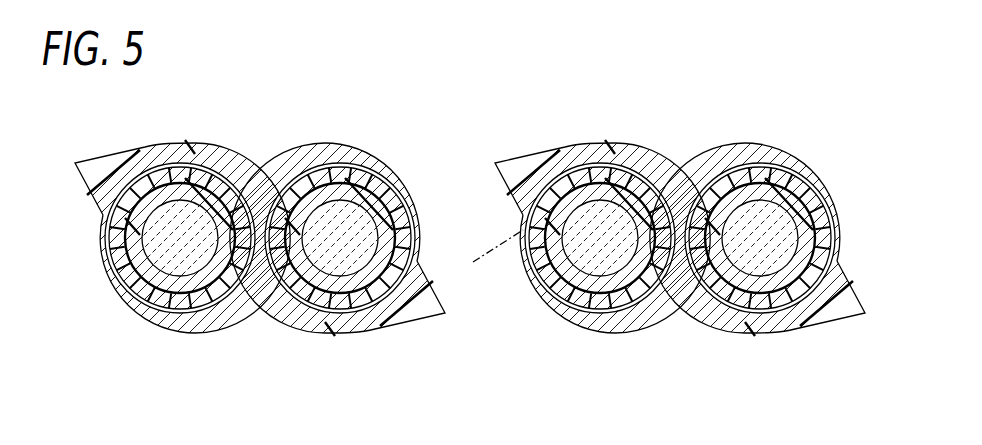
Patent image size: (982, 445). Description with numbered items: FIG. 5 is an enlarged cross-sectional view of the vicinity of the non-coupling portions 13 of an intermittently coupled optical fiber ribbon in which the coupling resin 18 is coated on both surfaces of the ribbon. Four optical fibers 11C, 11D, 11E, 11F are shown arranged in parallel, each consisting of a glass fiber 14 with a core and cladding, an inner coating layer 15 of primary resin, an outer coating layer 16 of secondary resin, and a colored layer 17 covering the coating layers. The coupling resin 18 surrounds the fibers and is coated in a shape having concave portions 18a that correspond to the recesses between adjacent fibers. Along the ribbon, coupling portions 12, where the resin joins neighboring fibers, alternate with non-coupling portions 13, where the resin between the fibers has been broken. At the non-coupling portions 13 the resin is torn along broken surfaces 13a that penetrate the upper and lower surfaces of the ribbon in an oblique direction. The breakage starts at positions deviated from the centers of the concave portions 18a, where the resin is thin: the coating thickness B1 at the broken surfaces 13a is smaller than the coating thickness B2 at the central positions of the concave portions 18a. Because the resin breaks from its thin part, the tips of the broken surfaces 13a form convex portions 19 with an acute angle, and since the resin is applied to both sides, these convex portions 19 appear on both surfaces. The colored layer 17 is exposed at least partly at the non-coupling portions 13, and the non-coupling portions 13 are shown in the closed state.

The optical fiber 11C is at (203, 334).
The optical fiber 11D is at (338, 324).
The optical fiber 11E is at (592, 319).
The optical fiber 11F is at (752, 319).
The coupling portion 12 is at (253, 165).
The non-coupling portion 13 is at (460, 152).
The broken surface 13a is at (86, 196).
The glass fiber 14 is at (137, 277).
The inner coating layer 15 is at (131, 247).
The outer coating layer 16 is at (151, 300).
The colored layer 17 is at (163, 320).
The coupling resin 18 is at (167, 148).
The concave portion 18a is at (258, 168).
The convex portion 19 is at (84, 162).
The coating thickness B1 is at (391, 153).
The coating thickness B2 is at (482, 191).